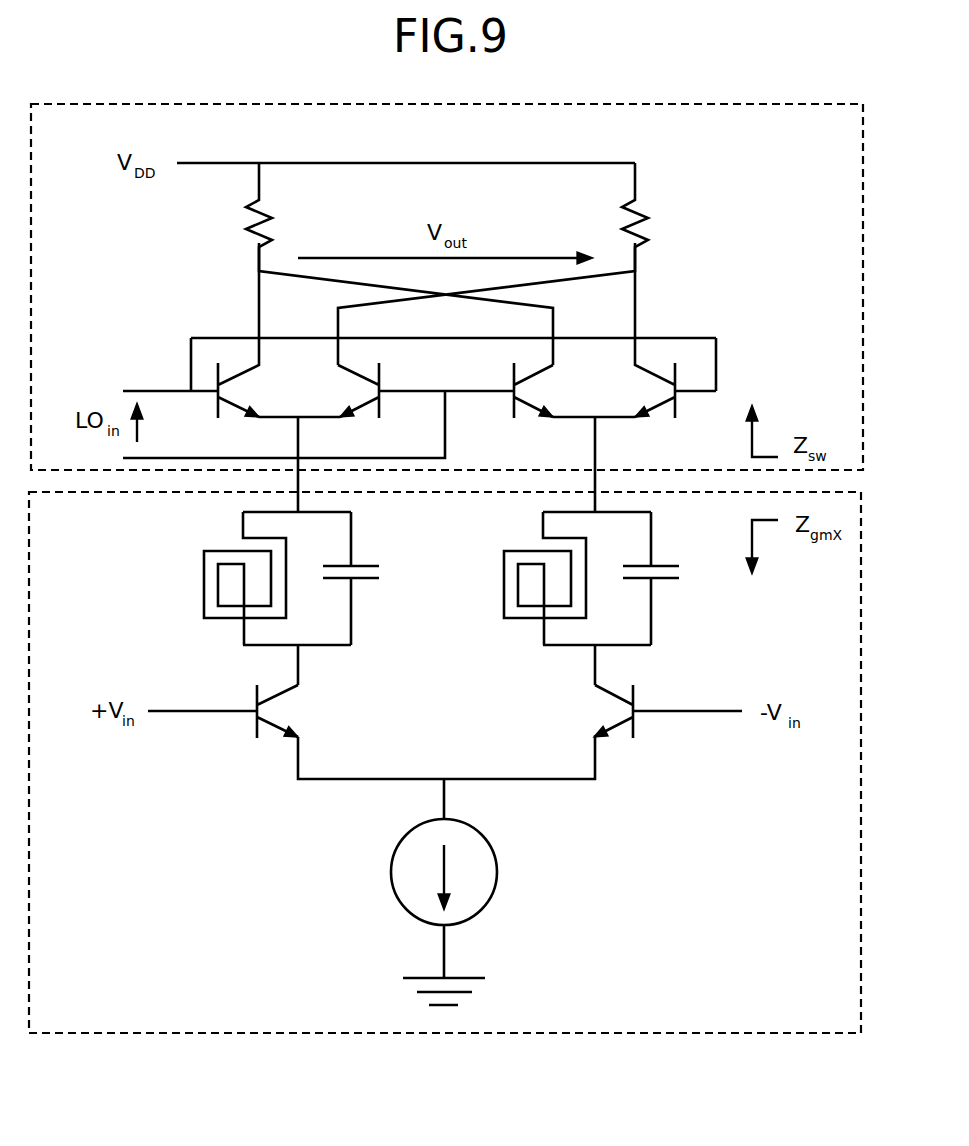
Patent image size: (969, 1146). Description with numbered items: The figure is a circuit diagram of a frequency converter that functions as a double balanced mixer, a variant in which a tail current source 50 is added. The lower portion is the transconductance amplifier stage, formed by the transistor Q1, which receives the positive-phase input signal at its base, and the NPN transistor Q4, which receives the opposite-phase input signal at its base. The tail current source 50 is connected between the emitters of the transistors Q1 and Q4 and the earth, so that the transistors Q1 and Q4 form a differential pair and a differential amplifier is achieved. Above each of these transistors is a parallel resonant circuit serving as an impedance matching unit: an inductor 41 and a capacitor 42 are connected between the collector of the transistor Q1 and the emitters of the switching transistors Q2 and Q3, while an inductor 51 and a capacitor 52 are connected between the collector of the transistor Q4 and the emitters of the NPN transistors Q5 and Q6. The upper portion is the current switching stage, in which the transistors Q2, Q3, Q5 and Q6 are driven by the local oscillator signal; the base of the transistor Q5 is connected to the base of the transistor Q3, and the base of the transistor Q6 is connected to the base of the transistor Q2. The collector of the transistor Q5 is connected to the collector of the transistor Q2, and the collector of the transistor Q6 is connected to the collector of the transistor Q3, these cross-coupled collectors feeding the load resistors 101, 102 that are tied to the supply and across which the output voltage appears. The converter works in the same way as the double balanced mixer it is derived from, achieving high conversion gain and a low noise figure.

The resistor 101 is at (240, 224).
The resistor 102 is at (657, 222).
The transistor Q2 is at (238, 373).
The transistor Q3 is at (367, 395).
The NPN transistor Q5 is at (533, 395).
The NPN transistor Q6 is at (657, 373).
The inductor 41 is at (230, 577).
The capacitor 42 is at (362, 560).
The inductor 51 is at (530, 577).
The capacitor 52 is at (662, 560).
The transistor Q1 is at (277, 713).
The NPN transistor Q4 is at (613, 712).
The tail current source 50 is at (498, 872).